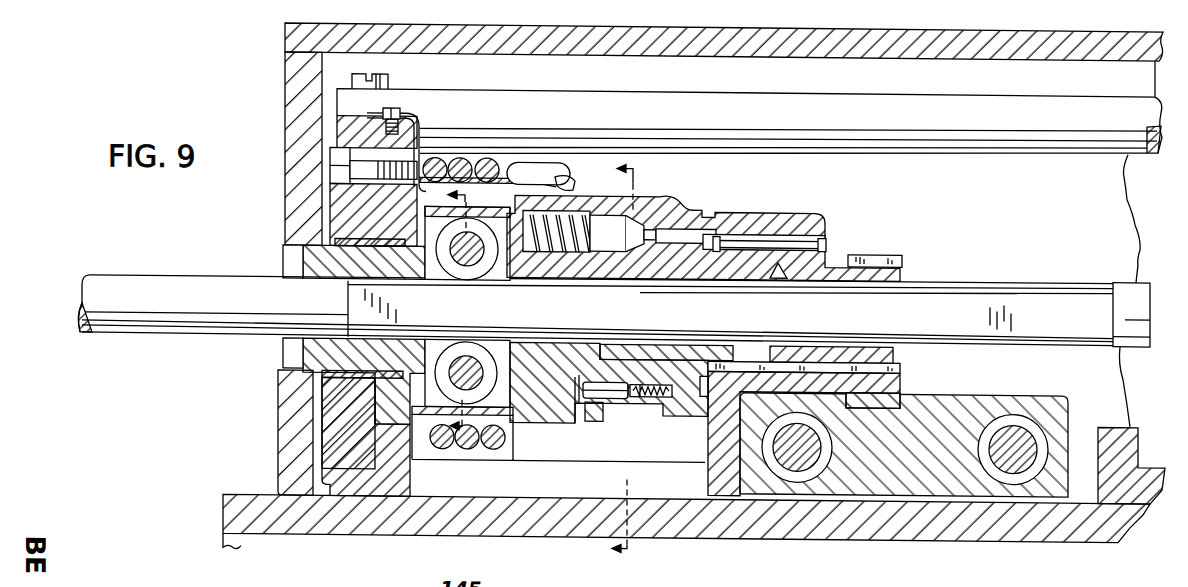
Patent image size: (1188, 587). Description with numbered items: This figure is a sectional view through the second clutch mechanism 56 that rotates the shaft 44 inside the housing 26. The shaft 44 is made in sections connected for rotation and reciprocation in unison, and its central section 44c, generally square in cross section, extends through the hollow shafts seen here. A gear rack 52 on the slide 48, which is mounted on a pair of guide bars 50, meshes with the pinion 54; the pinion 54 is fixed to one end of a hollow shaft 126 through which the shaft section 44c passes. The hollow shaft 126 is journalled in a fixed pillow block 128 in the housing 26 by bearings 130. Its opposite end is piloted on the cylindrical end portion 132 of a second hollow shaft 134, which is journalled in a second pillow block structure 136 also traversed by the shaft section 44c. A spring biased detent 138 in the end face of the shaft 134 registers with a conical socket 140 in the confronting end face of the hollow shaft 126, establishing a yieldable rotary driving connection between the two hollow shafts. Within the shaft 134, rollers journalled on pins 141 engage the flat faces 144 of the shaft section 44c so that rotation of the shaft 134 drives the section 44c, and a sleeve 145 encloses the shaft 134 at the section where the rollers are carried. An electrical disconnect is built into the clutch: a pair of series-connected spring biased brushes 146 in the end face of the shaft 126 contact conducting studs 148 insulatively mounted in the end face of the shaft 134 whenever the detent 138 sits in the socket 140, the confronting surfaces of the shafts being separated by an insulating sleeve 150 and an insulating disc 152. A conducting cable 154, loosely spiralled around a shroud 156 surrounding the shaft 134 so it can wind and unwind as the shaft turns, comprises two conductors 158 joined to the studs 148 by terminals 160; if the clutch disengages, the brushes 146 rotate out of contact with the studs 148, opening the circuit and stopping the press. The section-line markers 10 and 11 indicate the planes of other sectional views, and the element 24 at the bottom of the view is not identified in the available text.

The section line 10- 10 is at (445, 324).
The section line 11- 11 is at (612, 370).
The base plate 24 is at (1057, 534).
The housing 26 is at (292, 106).
The shaft 44 is at (222, 290).
The central section of shaft 44c is at (1022, 290).
The slide 48 is at (963, 390).
The guide bars 50 is at (1026, 421).
The gear rack 52 is at (898, 378).
The gear 54 is at (886, 257).
The second clutch mechanism 56 is at (660, 193).
The hollow shaft 126 is at (830, 258).
The pillow block 128 is at (781, 221).
The bearings 130 is at (832, 238).
The cylindrical end portion 132 is at (685, 342).
The second hollow shaft 134 is at (568, 403).
The second pillow block structure 136 is at (330, 420).
The spring biased detent 138 is at (609, 260).
The conical socket 140 is at (673, 208).
The pins 141 is at (467, 352).
The flat faces 144 is at (360, 303).
The sleeve 145 is at (511, 440).
The electrical brushes 146 is at (646, 401).
The electrically conducting studs 148 is at (578, 393).
The insulating sleeve 150 is at (733, 345).
The insulating disc 152 is at (600, 420).
The electrical conducting cable 154 is at (486, 156).
The shroud 156 is at (517, 163).
The conductors 158 is at (668, 125).
The terminals 160 is at (588, 421).